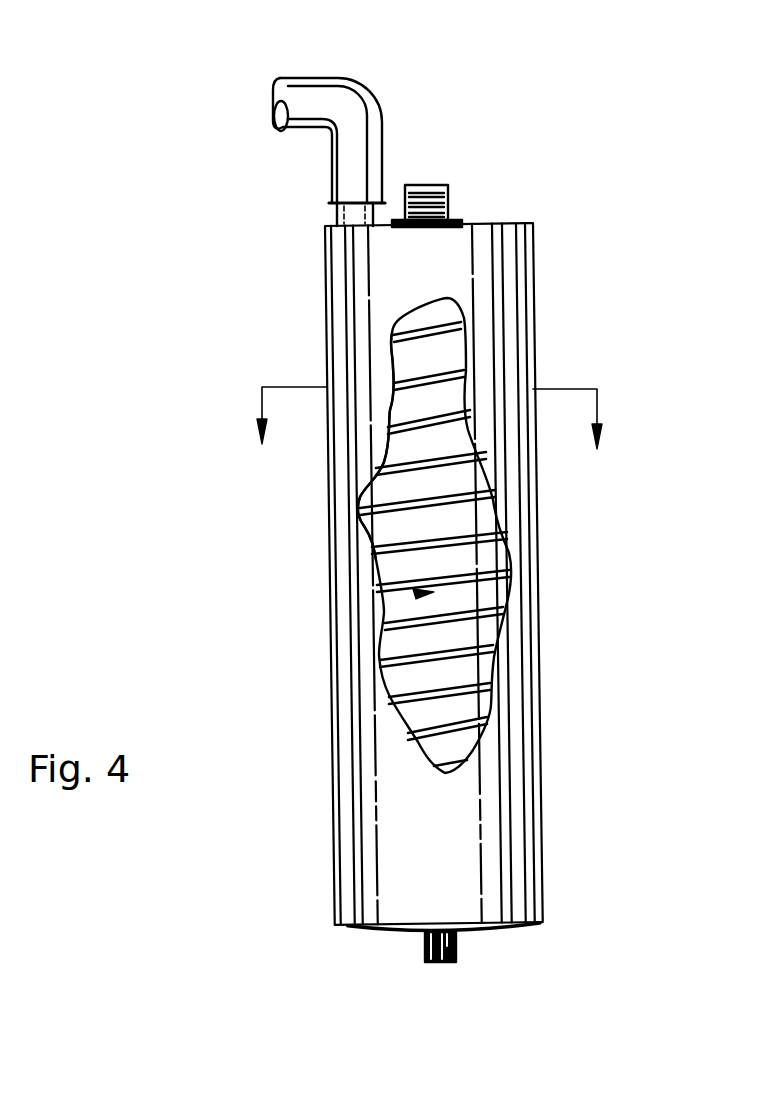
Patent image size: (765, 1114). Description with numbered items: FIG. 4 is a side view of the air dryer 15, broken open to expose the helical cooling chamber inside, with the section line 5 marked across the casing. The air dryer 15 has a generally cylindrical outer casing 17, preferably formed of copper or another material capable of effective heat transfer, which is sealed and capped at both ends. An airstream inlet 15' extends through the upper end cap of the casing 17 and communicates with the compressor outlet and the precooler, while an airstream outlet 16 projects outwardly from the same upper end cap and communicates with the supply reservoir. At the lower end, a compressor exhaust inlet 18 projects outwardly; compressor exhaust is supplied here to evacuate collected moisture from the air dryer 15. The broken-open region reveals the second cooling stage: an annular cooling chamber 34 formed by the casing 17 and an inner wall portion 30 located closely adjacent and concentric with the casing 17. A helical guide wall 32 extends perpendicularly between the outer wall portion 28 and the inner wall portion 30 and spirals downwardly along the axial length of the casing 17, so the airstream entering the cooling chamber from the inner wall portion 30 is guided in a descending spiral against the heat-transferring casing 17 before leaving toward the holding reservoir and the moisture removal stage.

The air dryer 15 is at (447, 509).
The airstream inlet 15' is at (329, 117).
The airstream outlet 16 is at (427, 186).
The outer casing 17 is at (326, 256).
The compressor exhaust inlet 18 is at (436, 962).
The outer wall portion 28 is at (506, 562).
The inner wall portion 30 is at (490, 669).
The helical guide wall 32 is at (396, 548).
The annular cooling chamber 34 is at (414, 595).
The section line 5- 5 is at (429, 433).